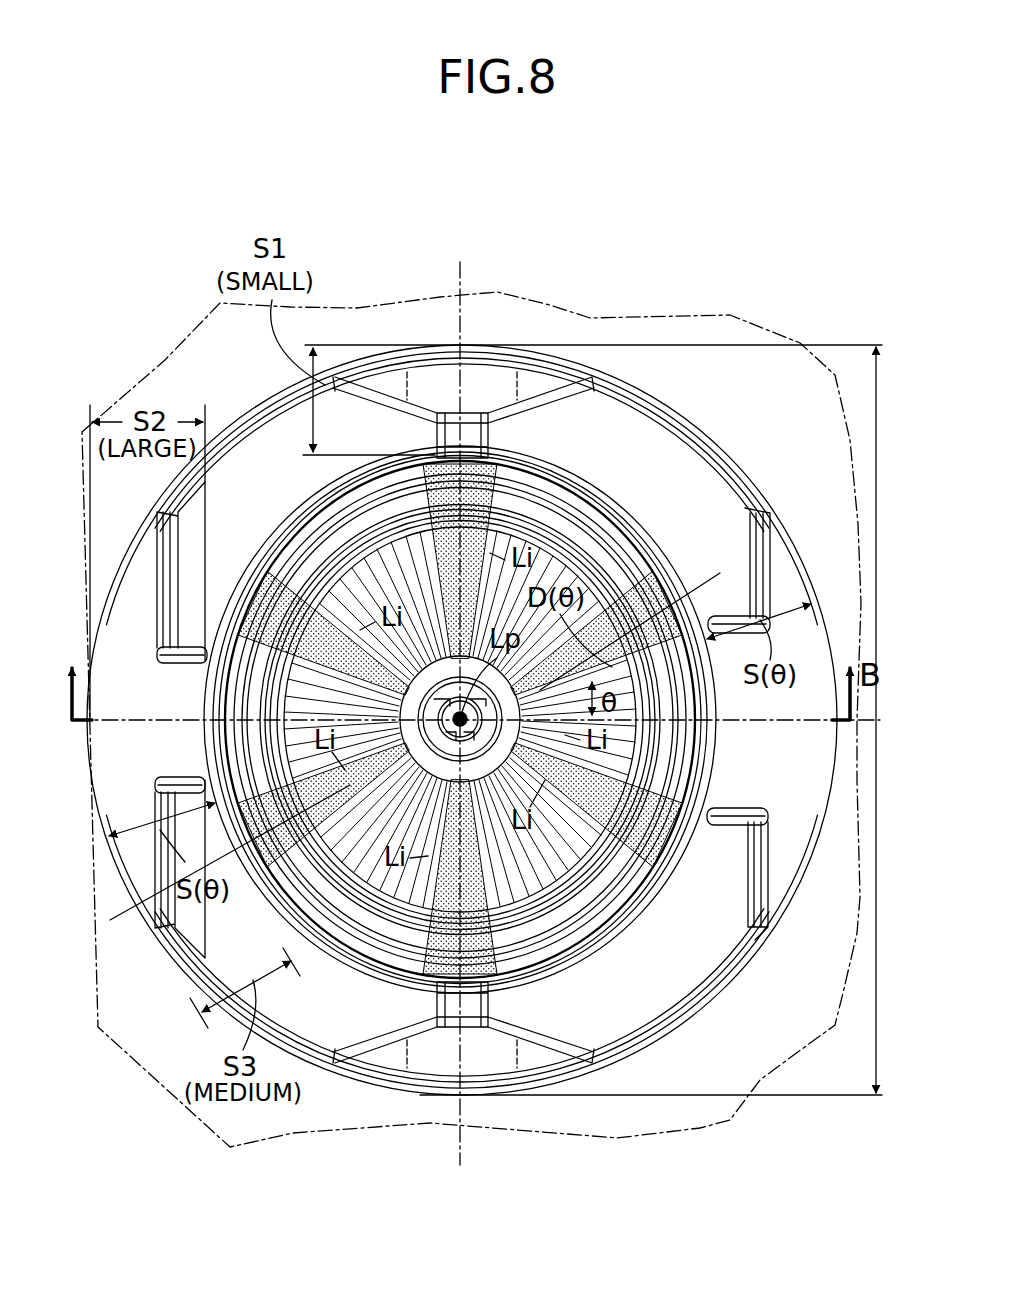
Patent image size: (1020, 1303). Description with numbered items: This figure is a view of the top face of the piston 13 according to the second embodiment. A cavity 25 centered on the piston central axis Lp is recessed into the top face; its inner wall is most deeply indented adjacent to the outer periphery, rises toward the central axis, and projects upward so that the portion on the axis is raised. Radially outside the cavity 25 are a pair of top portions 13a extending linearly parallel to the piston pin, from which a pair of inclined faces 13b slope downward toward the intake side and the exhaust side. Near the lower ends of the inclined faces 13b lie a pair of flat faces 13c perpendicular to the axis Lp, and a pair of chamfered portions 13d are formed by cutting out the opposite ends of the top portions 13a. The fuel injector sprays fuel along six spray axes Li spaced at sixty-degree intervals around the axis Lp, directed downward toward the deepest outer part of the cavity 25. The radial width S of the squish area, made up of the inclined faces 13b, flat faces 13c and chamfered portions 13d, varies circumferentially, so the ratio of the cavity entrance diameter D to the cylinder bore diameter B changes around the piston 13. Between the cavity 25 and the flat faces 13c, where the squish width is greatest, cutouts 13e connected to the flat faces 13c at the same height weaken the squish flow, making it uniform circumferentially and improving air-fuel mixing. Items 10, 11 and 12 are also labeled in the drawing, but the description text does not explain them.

The section line 10 is at (461, 727).
The lens body (phantom outline) 11 is at (640, 318).
The inner ring 12 is at (690, 416).
The piston 13 is at (698, 412).
The top portions 13a is at (492, 426).
The inclined faces 13b is at (276, 452).
The flat faces 13c is at (134, 604).
The chamfered portions 13d is at (483, 372).
The cutouts 13e is at (178, 660).
The cavity 25 is at (419, 830).